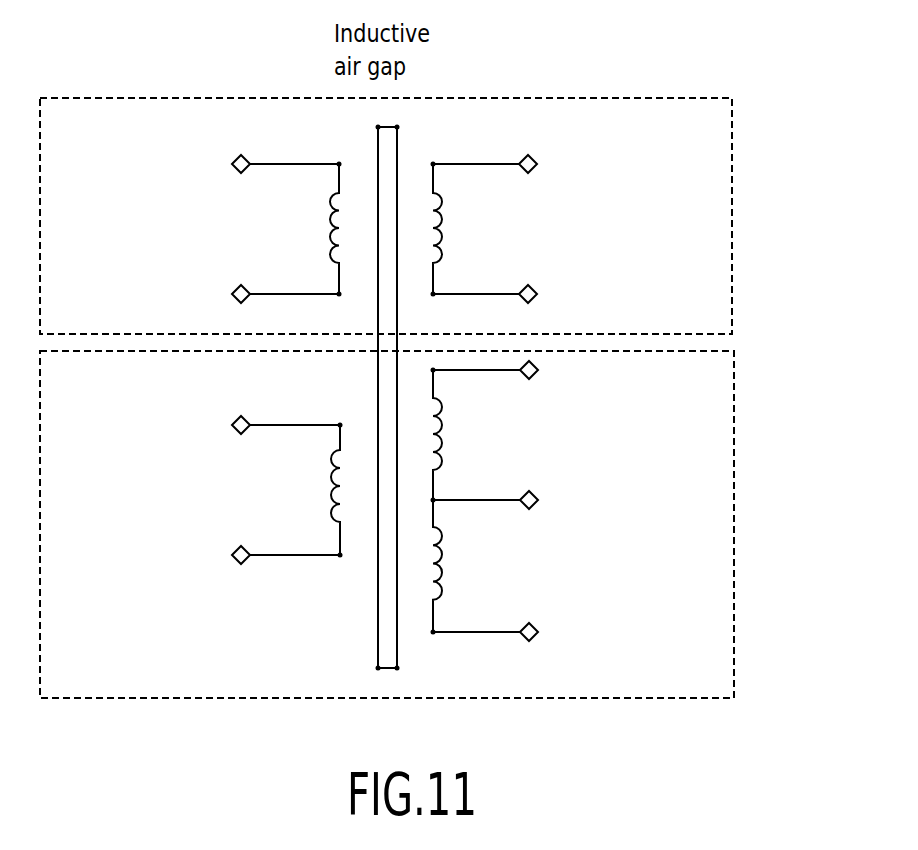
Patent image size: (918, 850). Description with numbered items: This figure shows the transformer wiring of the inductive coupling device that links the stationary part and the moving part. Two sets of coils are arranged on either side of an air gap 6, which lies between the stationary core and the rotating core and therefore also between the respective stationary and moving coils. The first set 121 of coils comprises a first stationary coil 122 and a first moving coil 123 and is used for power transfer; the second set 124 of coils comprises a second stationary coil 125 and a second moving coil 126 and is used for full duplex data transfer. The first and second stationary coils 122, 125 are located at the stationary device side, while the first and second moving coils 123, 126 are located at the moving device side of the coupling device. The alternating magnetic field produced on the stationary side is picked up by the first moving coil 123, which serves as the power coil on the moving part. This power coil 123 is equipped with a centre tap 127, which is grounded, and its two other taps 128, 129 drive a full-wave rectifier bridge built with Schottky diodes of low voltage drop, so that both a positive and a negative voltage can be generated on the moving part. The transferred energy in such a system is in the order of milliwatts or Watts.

The air gap 6 is at (388, 158).
The first set of coils 121 is at (735, 557).
The first stationary coil 122 is at (237, 515).
The first moving coil 123 is at (567, 520).
The second set of coils 124 is at (735, 132).
The second stationary coil 125 is at (238, 204).
The second moving coil 126 is at (550, 205).
The centre tap 127 is at (538, 506).
The tap 128 is at (538, 637).
The tap 129 is at (538, 373).